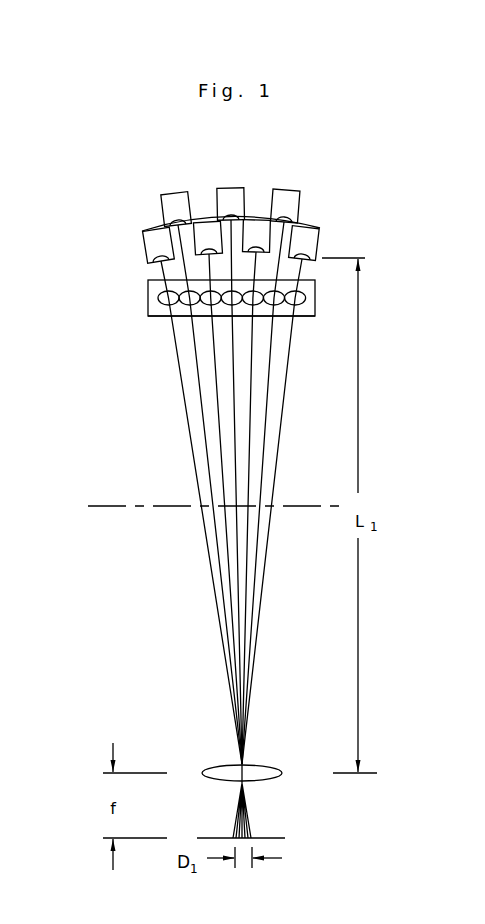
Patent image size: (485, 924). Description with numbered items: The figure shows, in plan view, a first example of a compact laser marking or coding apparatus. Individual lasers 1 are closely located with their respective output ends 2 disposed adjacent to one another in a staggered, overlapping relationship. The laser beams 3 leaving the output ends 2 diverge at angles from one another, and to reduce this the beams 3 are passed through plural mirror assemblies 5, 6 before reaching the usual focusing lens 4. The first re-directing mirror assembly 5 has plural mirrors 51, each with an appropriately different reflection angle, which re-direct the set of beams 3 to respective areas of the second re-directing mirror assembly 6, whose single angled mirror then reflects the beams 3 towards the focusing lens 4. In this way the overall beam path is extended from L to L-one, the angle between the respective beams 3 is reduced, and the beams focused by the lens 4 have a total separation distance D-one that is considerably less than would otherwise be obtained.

The lasers 1 is at (312, 223).
The output ends 2 is at (155, 262).
The laser beams 3 is at (252, 445).
The focusing lens 4 is at (263, 773).
The first re-directing mirror assembly 5 is at (185, 307).
The mirrors 51 is at (158, 300).
The second re-directing mirror assembly 6 is at (163, 315).